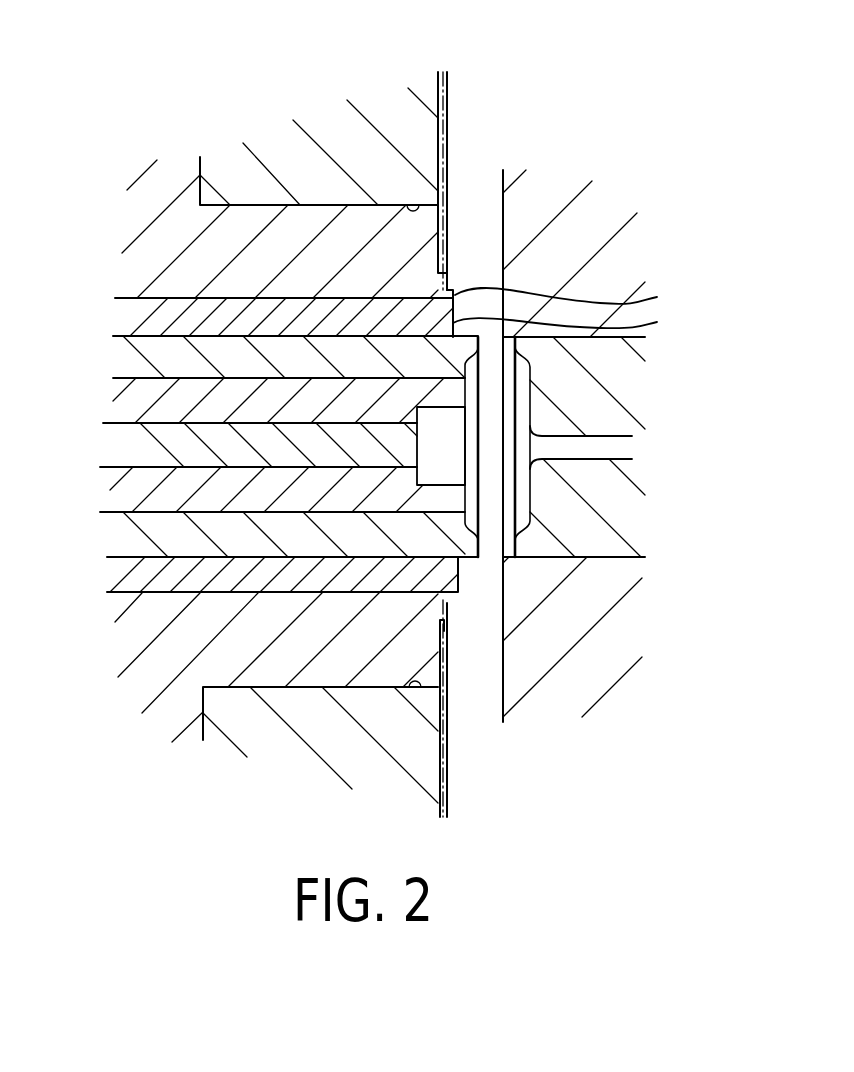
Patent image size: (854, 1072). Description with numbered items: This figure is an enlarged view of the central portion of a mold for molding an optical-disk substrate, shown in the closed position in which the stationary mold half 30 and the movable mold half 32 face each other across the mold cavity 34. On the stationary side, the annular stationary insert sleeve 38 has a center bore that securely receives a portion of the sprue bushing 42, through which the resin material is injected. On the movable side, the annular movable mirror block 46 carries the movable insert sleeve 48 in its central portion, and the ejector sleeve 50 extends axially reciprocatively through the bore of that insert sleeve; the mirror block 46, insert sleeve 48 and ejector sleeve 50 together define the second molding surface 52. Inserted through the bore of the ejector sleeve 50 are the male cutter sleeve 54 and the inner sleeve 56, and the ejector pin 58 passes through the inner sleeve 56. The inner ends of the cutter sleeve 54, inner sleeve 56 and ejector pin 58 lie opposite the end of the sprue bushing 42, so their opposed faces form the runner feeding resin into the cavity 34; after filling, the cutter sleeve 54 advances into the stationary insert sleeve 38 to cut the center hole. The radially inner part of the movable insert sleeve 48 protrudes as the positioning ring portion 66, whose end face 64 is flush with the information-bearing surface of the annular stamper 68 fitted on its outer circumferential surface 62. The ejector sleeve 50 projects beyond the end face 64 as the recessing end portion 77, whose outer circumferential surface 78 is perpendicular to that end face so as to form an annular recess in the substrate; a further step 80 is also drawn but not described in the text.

The stationary mold half 30 is at (591, 104).
The movable mold half 32 is at (331, 57).
The mold cavity 34 is at (503, 200).
The stationary insert sleeve 38 is at (560, 635).
The sprue bushing 42 is at (605, 543).
The movable mirror block 46 is at (218, 173).
The movable insert sleeve 48 is at (168, 648).
The ejector sleeve 50 is at (122, 572).
The second molding surface 52 is at (440, 147).
The male cutter sleeve 54 is at (132, 362).
The inner sleeve 56 is at (125, 487).
The ejector pin 58 is at (137, 445).
The outer circumferential surface 62 is at (438, 632).
The end face 64 is at (450, 291).
The positioning ring portion 66 is at (447, 610).
The annular stamper 68 is at (447, 790).
The recessing end portion 77 is at (574, 327).
The outer circumferential surface 78 is at (575, 297).
The lower step 80 is at (458, 563).